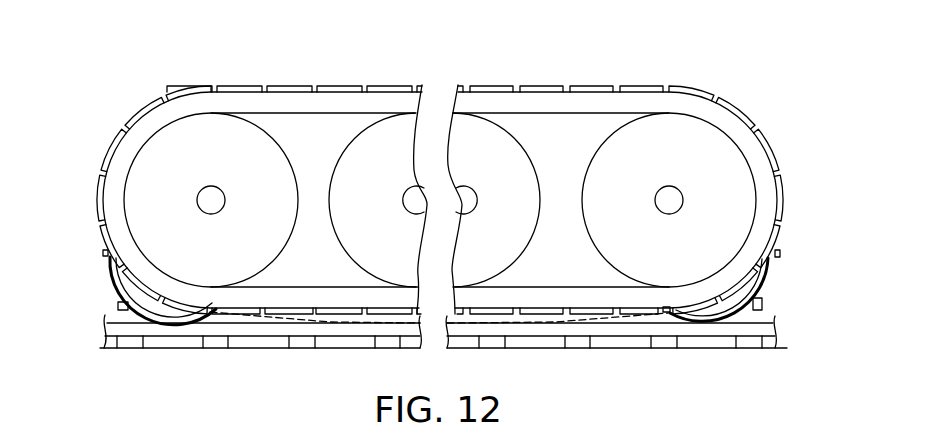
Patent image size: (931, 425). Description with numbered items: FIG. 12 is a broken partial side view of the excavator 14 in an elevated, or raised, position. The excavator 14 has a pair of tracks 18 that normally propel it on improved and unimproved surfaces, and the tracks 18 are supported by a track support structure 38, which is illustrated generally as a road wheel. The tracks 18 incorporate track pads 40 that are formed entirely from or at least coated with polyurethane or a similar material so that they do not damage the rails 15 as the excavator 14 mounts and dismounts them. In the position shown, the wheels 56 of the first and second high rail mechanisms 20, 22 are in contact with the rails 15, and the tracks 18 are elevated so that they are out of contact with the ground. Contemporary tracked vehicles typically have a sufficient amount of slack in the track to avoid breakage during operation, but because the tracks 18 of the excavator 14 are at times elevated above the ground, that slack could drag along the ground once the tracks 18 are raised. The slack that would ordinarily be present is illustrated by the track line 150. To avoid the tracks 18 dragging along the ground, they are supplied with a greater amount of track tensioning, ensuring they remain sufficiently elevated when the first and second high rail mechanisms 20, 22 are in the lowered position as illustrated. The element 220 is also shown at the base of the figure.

The excavator 14 is at (766, 72).
The tracks 18 is at (693, 106).
The track support structure 38 is at (621, 113).
The track pads 40 is at (237, 85).
The first high rail mechanism 20 is at (782, 270).
The second high rail mechanism 22 is at (100, 273).
The wheels 56 is at (137, 299).
The rails 15 is at (752, 332).
The track line 150 is at (645, 318).
The support frame 220 is at (168, 348).